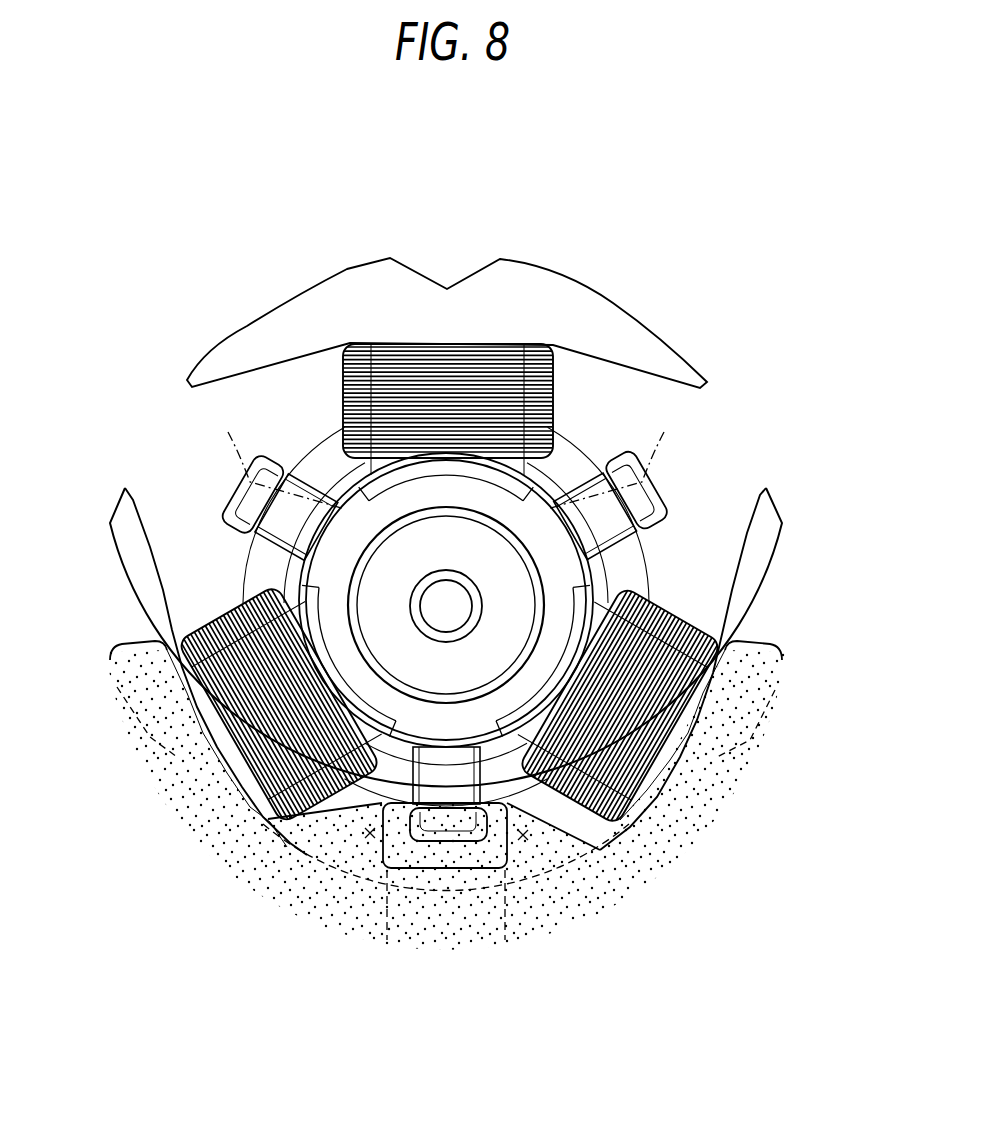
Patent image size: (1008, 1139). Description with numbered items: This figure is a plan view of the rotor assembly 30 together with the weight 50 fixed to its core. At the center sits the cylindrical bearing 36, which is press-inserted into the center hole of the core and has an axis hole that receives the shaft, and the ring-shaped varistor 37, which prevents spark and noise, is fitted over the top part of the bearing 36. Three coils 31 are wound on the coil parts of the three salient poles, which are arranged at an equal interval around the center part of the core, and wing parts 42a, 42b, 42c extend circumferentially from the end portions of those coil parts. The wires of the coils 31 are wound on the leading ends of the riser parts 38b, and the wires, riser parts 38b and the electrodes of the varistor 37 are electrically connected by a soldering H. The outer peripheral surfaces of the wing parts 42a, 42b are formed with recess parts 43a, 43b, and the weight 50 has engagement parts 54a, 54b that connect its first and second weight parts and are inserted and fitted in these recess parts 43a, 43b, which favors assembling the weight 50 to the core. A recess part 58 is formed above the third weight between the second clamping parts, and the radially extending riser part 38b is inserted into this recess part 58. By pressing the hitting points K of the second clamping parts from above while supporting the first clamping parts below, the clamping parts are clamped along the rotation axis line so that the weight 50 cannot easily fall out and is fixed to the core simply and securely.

The rotor assembly 30 is at (668, 198).
The coils 31 is at (337, 380).
The bearing 36 is at (515, 597).
The varistor 37 is at (527, 520).
The riser part 38b is at (242, 500).
The wing part 42a is at (107, 568).
The wing part 42b is at (788, 597).
The wing part 42c is at (584, 279).
The recess part 43a is at (167, 756).
The recess part 43b is at (728, 756).
The weight 50 is at (446, 737).
The engagement part 54a is at (143, 777).
The engagement part 54b is at (747, 778).
The recess part 58 is at (463, 857).
The soldering H is at (378, 804).
The hitting points K is at (370, 860).